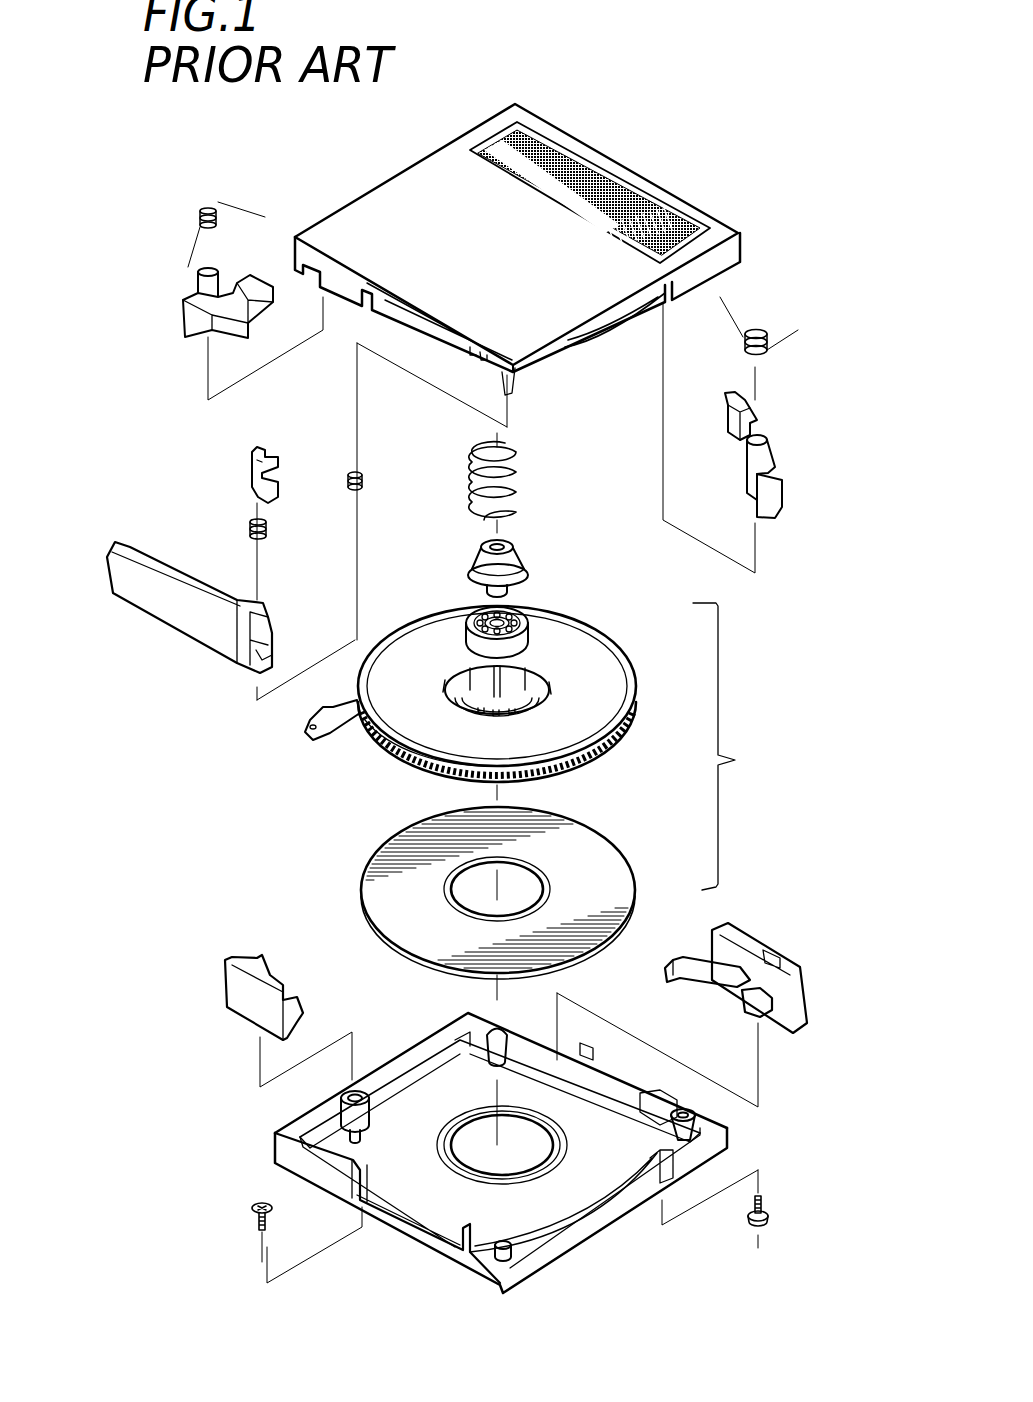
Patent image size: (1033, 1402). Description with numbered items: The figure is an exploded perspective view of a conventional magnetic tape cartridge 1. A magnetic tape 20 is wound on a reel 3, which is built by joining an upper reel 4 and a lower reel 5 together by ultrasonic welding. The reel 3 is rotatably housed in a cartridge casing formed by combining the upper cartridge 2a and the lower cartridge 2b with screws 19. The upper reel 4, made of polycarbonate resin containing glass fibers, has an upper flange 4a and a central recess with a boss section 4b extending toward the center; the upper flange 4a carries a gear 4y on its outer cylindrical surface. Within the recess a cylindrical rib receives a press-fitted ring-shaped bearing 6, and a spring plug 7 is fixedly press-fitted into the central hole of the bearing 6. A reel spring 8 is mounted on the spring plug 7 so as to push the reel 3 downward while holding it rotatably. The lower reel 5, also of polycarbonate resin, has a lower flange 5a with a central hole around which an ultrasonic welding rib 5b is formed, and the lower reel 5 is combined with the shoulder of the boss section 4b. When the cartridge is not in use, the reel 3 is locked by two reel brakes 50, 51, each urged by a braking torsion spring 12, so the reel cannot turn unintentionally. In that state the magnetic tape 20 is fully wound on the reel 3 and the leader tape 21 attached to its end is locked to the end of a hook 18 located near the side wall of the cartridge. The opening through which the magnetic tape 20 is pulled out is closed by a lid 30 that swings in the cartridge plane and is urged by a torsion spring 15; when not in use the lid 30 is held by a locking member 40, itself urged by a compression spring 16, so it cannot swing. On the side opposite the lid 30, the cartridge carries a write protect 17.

The magnetic tape cartridge 1 is at (723, 108).
The upper cartridge 2a is at (388, 195).
The lower cartridge 2b is at (520, 1195).
The reel 3 is at (725, 746).
The upper reel 4 is at (531, 678).
The upper flange 4a is at (605, 673).
The boss section 4b is at (553, 690).
The gear 4y is at (618, 757).
The lower reel 5 is at (536, 893).
The lower flange 5a is at (623, 878).
The ultrasonic welding rib 5b is at (450, 886).
The ring-shaped bearing 6 is at (472, 603).
The spring plug 7 is at (480, 551).
The reel spring 8 is at (520, 480).
The braking torsion spring 12 is at (232, 200).
The torsion spring 15 is at (364, 481).
The compression spring 16 is at (270, 527).
The write protect 17 is at (805, 1022).
The hook 18 is at (278, 982).
The screw 19 is at (250, 1205).
The magnetic tape 20 is at (412, 770).
The leader tape 21 is at (304, 730).
The lid 30 is at (168, 606).
The locking member 40 is at (280, 453).
The reel brake 50 is at (185, 315).
The reel brake 51 is at (780, 446).